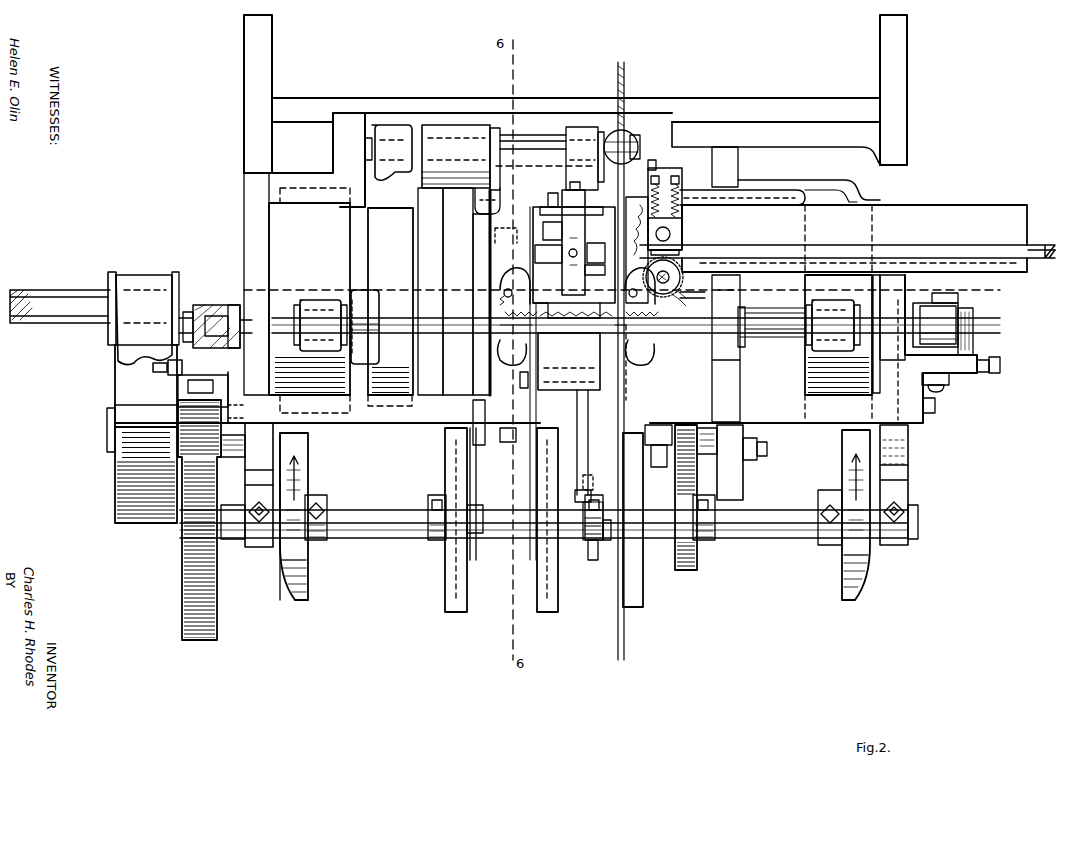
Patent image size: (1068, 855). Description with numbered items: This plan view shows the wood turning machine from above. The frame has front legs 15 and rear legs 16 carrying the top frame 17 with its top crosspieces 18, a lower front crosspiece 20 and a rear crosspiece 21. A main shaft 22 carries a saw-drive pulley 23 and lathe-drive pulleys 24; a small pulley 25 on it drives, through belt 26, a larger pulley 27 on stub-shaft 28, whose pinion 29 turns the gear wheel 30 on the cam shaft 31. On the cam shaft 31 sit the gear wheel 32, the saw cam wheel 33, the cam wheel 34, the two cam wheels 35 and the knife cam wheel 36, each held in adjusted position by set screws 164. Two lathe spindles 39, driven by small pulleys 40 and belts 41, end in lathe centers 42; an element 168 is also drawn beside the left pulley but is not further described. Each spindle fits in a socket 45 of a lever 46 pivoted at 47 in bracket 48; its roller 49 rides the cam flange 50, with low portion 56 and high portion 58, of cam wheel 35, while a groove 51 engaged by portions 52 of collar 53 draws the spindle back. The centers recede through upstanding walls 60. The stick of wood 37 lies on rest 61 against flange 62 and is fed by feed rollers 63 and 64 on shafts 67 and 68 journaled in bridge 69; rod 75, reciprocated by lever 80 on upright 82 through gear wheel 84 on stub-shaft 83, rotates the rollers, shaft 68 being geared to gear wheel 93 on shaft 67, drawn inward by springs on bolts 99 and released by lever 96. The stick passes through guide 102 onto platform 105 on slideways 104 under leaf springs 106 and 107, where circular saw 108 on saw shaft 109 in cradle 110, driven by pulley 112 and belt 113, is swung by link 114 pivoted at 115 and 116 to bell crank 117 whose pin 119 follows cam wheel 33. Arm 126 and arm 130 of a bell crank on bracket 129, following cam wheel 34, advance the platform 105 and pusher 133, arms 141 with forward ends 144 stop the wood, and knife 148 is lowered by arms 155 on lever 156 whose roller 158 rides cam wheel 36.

The front legs 15 is at (256, 549).
The rear legs 16 is at (262, 66).
The top frame 17 is at (332, 148).
The top crosspieces 18 is at (942, 282).
The lower front crosspiece 20 is at (396, 540).
The rear crosspiece 21 is at (576, 110).
The main shaft 22 is at (36, 292).
The saw-drive pulley 23 is at (390, 301).
The lathe-drive pulleys 24 is at (808, 380).
The small pulley 25 is at (106, 282).
The belt 26 is at (126, 348).
The larger pulley 27 is at (115, 394).
The stub-shaft 28 is at (107, 430).
The pinion 29 is at (190, 440).
The gear wheel 30 is at (182, 600).
The cam shaft 31 is at (235, 540).
The gear wheel 32 is at (686, 572).
The saw controlling cam wheel 33 is at (447, 596).
The cam wheel 34 is at (546, 614).
The cam wheels 35 is at (306, 580).
The cam wheel 36 is at (594, 550).
The stick of wood 37 is at (1032, 248).
The lathe spindles 39 is at (458, 334).
The small pulley 40 is at (300, 306).
The belt 41 is at (312, 305).
The lathe centers 42 is at (563, 314).
The socket 45 is at (205, 310).
The lever 46 is at (196, 310).
The pivot 47 is at (176, 386).
The bracket 48 is at (160, 374).
The anti-friction roller 49 is at (308, 458).
The cam flange 50 is at (872, 560).
The encircling groove 51 is at (253, 343).
The inwardly extending portions 52 is at (254, 320).
The yoke or collar 53 is at (232, 306).
The low portion 56 is at (288, 604).
The high portion 58 is at (278, 562).
The upstanding walls 60 is at (632, 200).
The horizontal rest 61 is at (854, 238).
The upstanding flange 62 is at (968, 262).
The feed roller 63 is at (680, 272).
The feed roller 64 is at (672, 230).
The vertical shaft 67 is at (690, 268).
The vertical shaft 68 is at (686, 240).
The horizontal bridge 69 is at (654, 155).
The rod 75 is at (654, 626).
The lever 80 is at (659, 468).
The short upright 82 is at (745, 490).
The stub-shaft 83 is at (768, 452).
The gear wheel 84 is at (700, 442).
The gear wheel 93 is at (682, 287).
The lever 96 is at (779, 192).
The bolts 99 is at (662, 176).
The encircling guide 102 is at (638, 230).
The slideways 104 is at (572, 383).
The movable platform 105 is at (550, 264).
The leaf spring 106 is at (581, 238).
The leaf spring 107 is at (584, 274).
The circular saw 108 is at (624, 76).
The saw shaft 109 is at (640, 138).
The cradle 110 is at (440, 130).
The small pulley 112 is at (370, 128).
The belt 113 is at (392, 138).
The connecting link 114 is at (500, 166).
The pivot 115 is at (502, 134).
The pivot 116 is at (494, 220).
The bell crank 117 is at (486, 242).
The laterally extending pin 119 is at (474, 550).
The rearwardly extending arm 126 is at (582, 408).
The bracket 129 is at (606, 542).
The arm 130 is at (577, 458).
The pusher 133 is at (554, 243).
The pivotally mounted arms 141 is at (520, 310).
The forward ends 144 is at (650, 352).
The knife 148 is at (569, 361).
The vertical arms 155 is at (515, 390).
The lever 156 is at (595, 461).
The anti-friction roller 158 is at (591, 560).
The set screws 164 is at (328, 504).
The gear 168 is at (368, 292).